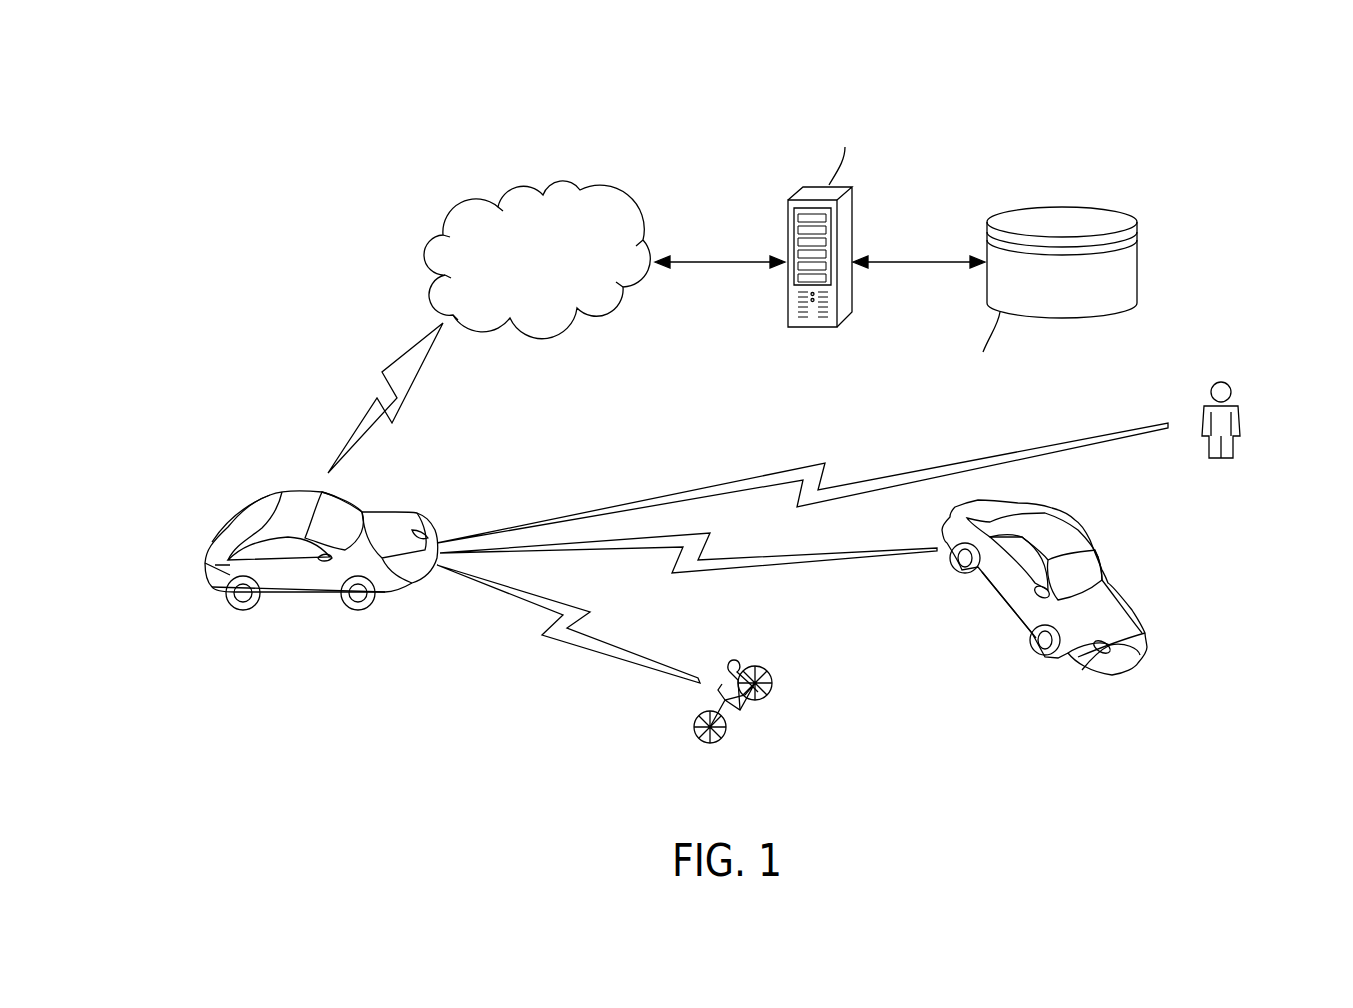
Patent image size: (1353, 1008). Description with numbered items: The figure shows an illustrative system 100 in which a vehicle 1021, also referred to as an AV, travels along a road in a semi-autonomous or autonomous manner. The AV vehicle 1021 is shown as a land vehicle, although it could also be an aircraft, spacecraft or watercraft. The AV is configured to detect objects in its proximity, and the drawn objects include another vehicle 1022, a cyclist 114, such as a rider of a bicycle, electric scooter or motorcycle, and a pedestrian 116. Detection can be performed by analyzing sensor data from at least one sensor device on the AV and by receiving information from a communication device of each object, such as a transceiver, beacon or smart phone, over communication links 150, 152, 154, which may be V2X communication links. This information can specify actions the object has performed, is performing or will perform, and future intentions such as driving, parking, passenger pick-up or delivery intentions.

The system 100 is at (213, 162).
The vehicle 1021 is at (310, 598).
The vehicle 1022 is at (1042, 663).
The cyclist 114 is at (765, 705).
The pedestrian 116 is at (1219, 460).
The communication link 150 is at (723, 483).
The communication link 152 is at (828, 560).
The communication link 154 is at (593, 652).